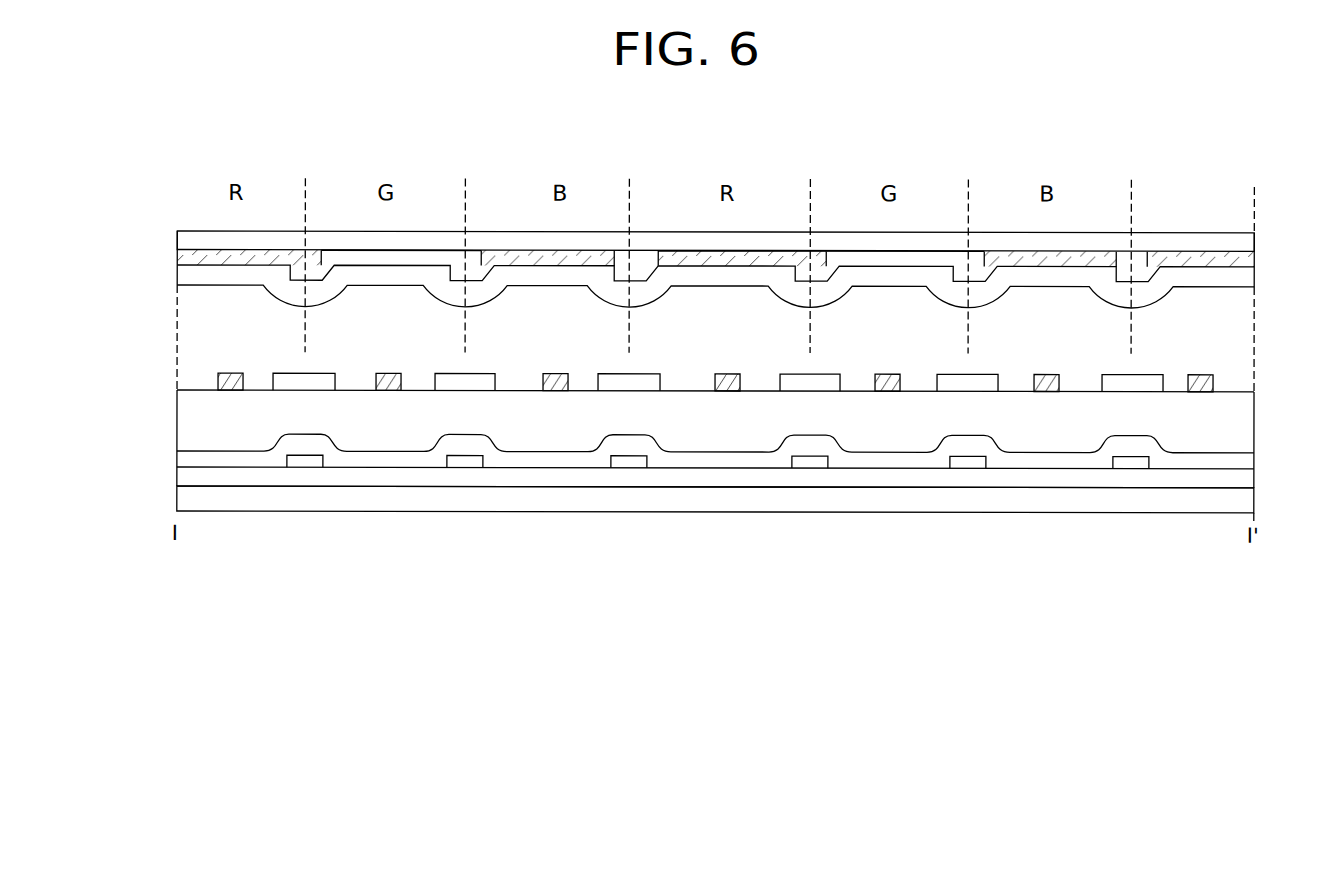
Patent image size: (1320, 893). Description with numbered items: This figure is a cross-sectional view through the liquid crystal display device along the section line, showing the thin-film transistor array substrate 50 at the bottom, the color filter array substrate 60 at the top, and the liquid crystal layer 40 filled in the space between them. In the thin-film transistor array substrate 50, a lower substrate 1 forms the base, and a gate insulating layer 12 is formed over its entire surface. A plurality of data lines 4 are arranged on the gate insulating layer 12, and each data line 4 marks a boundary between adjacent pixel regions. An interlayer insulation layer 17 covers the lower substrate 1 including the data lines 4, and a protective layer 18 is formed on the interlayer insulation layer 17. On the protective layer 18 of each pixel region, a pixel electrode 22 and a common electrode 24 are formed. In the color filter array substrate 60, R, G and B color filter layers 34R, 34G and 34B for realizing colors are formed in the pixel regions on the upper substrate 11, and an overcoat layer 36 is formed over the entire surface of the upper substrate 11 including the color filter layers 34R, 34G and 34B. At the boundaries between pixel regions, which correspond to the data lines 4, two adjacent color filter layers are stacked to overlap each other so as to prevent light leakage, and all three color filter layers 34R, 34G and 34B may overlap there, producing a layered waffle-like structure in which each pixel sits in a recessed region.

The color filter array substrate 60 is at (156, 242).
The liquid crystal layer 40 is at (192, 330).
The thin-film transistor array substrate 50 is at (156, 436).
The upper substrate 11 is at (1238, 244).
The overcoat layer 36 is at (1238, 277).
The R color filter layer 34R is at (193, 260).
The G color filter layer 34G is at (342, 260).
The B color filter layer 34B is at (514, 260).
The protective layer 18 is at (1238, 417).
The interlayer insulation layer 17 is at (1238, 462).
The gate insulating layer 12 is at (1238, 482).
The lower substrate 1 is at (1238, 500).
The pixel electrode 22 is at (385, 388).
The common electrode 24 is at (486, 388).
The data line 4 is at (461, 463).